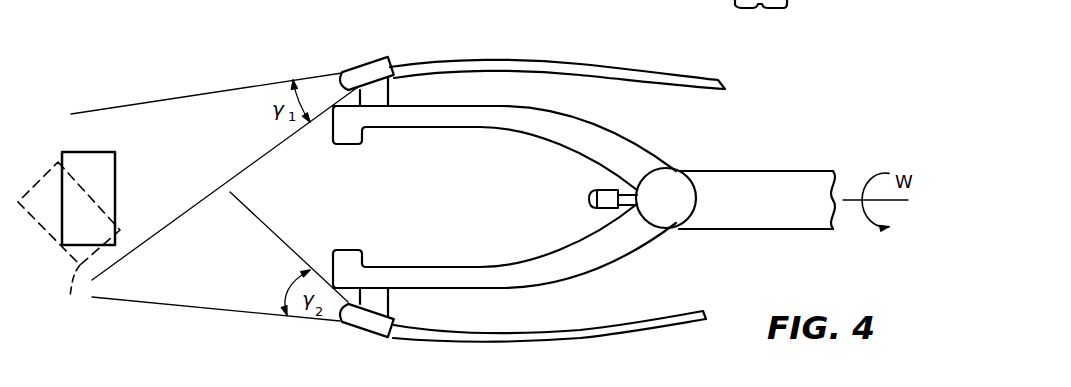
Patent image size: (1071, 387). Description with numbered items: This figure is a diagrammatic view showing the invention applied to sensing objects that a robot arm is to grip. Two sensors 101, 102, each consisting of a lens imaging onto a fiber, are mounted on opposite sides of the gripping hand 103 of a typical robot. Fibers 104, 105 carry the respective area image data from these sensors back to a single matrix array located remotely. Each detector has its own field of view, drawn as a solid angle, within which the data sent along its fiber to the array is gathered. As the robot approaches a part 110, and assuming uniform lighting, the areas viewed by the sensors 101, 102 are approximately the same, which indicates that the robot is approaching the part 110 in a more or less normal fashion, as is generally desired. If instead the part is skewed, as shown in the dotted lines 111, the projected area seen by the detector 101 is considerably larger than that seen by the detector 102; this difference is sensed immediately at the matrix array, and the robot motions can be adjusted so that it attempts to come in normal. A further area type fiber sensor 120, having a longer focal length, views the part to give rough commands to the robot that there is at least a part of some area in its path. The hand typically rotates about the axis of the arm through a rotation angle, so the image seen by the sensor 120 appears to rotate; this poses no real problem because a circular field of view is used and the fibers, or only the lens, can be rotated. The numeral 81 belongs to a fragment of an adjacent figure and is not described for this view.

The sensor 101 is at (368, 70).
The sensor 102 is at (363, 318).
The gripping hand 103 is at (463, 270).
The fiber 104 is at (547, 66).
The fiber 105 is at (580, 328).
The part 110 is at (115, 162).
The skewed part (dotted lines) 111 is at (81, 293).
The area type fiber sensor 120 is at (597, 189).
The element of adjacent figure 81 is at (805, 0).